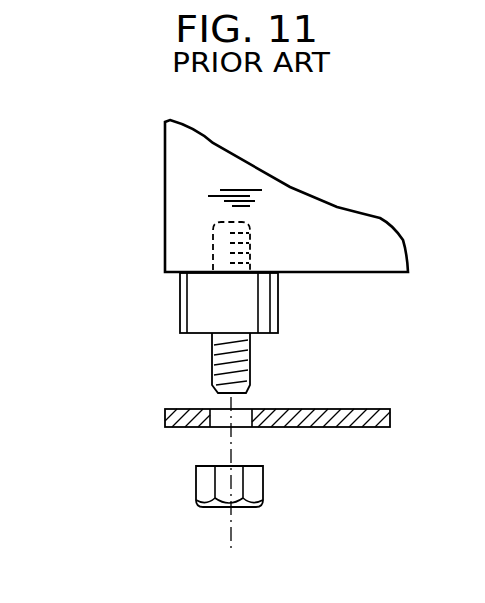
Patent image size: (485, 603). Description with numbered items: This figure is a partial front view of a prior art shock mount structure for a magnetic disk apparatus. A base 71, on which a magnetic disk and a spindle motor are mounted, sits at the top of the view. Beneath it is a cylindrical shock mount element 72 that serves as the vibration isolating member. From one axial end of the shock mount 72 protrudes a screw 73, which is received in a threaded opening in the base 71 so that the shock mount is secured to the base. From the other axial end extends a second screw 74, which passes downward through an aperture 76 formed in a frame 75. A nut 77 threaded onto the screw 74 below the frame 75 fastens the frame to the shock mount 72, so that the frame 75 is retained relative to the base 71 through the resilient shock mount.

The base 71 is at (178, 187).
The cylindrical shock mount element 72 is at (195, 302).
The screw 73 is at (212, 244).
The screw 74 is at (212, 369).
The frame 75 is at (165, 420).
The aperture 76 is at (222, 428).
The nut 77 is at (203, 485).